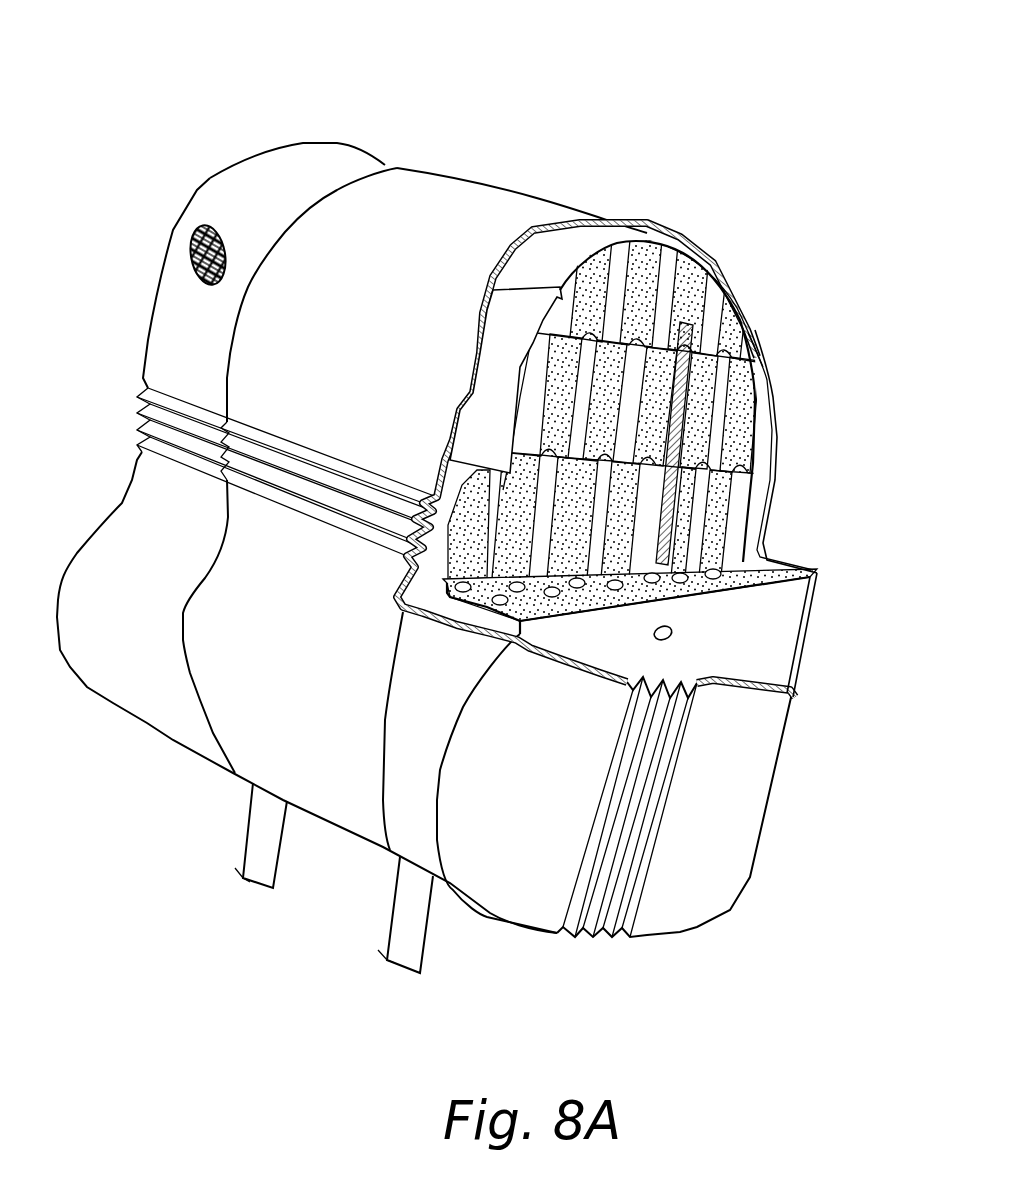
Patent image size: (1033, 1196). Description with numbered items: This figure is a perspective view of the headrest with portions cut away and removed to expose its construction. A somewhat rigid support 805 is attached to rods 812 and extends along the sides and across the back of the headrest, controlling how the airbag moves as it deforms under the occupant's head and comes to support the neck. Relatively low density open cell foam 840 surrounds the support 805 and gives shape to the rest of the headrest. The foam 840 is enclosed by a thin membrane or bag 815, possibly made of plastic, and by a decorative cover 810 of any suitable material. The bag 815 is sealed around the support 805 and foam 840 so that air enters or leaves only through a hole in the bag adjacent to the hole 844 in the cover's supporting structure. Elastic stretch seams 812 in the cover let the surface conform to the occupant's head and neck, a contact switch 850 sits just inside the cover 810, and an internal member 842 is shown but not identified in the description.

The support 805 is at (748, 312).
The decorative cover 810 is at (537, 228).
The rods 812 is at (405, 935).
The bag 815 is at (562, 248).
The open cell foam 840 is at (662, 283).
The rod 842 is at (685, 322).
The hole 844 is at (673, 634).
The contact switch 850 is at (507, 343).